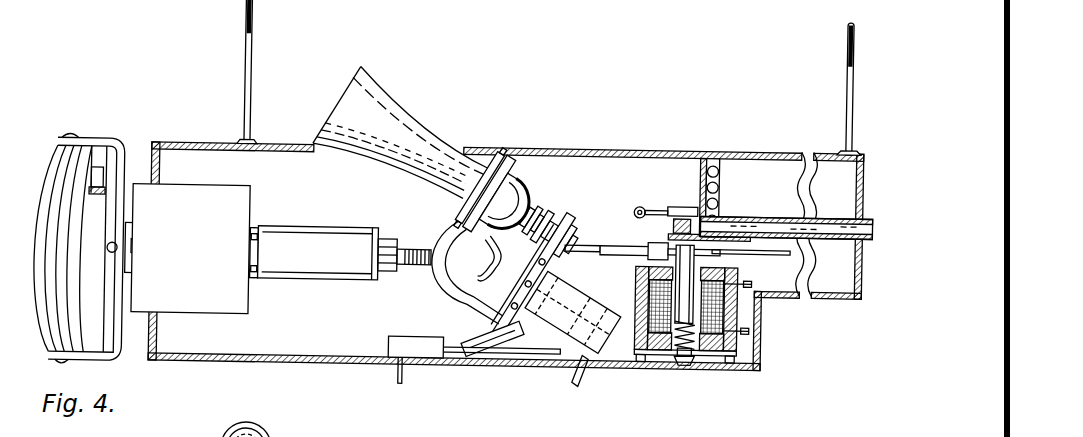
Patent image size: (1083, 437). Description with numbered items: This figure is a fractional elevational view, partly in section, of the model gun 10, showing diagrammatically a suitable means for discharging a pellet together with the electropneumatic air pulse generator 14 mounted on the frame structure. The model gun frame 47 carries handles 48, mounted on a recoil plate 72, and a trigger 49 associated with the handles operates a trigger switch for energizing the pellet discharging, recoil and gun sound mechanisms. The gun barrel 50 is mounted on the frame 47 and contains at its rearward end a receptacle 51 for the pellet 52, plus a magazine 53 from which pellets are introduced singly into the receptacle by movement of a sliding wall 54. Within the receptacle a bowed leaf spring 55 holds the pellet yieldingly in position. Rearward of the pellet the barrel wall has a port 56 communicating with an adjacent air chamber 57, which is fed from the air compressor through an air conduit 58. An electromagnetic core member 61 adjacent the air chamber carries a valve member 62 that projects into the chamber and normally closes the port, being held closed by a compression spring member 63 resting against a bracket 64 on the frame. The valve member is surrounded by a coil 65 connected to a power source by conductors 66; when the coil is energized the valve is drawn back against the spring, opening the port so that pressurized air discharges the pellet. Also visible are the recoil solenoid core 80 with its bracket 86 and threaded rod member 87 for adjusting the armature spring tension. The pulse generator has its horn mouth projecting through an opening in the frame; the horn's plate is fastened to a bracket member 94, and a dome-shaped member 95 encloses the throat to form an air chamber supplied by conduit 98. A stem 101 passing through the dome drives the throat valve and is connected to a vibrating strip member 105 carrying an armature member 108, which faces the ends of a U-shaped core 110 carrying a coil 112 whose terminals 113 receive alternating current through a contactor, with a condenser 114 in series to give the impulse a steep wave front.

The gun 10 is at (543, 140).
The electropneumatic air pulse generator 14 is at (388, 91).
The model gun frame 47 is at (603, 148).
The handles 48 is at (86, 169).
The trigger 49 is at (100, 187).
The gun barrel 50 is at (837, 234).
The receptacle 51 is at (661, 192).
The pellet 52 is at (730, 206).
The magazine 53 is at (713, 153).
The sliding wall 54 is at (688, 203).
The bowed leaf spring 55 is at (740, 220).
The port 56 is at (572, 241).
The air chamber 57 is at (720, 250).
The air conduit 58 is at (612, 297).
The electromagnetic core member 61 is at (643, 347).
The valve member 62 is at (632, 249).
The compression spring member 63 is at (686, 357).
The bracket 64 is at (698, 355).
The coil 65 is at (655, 362).
The conductors 66 is at (758, 292).
The recoil plate 72 is at (108, 172).
The solenoid core 80 is at (231, 197).
The bracket 86 is at (314, 236).
The threaded rod member 87 is at (420, 250).
The bracket member 94 is at (448, 277).
The dome-shaped member 95 is at (553, 262).
The conduit 98 is at (479, 261).
The stem 101 is at (562, 231).
The vibrating strip member 105 is at (547, 222).
The armature member 108 is at (513, 344).
The core 110 is at (572, 266).
The coil 112 is at (596, 318).
The terminals 113 is at (457, 348).
The condenser 114 is at (408, 341).